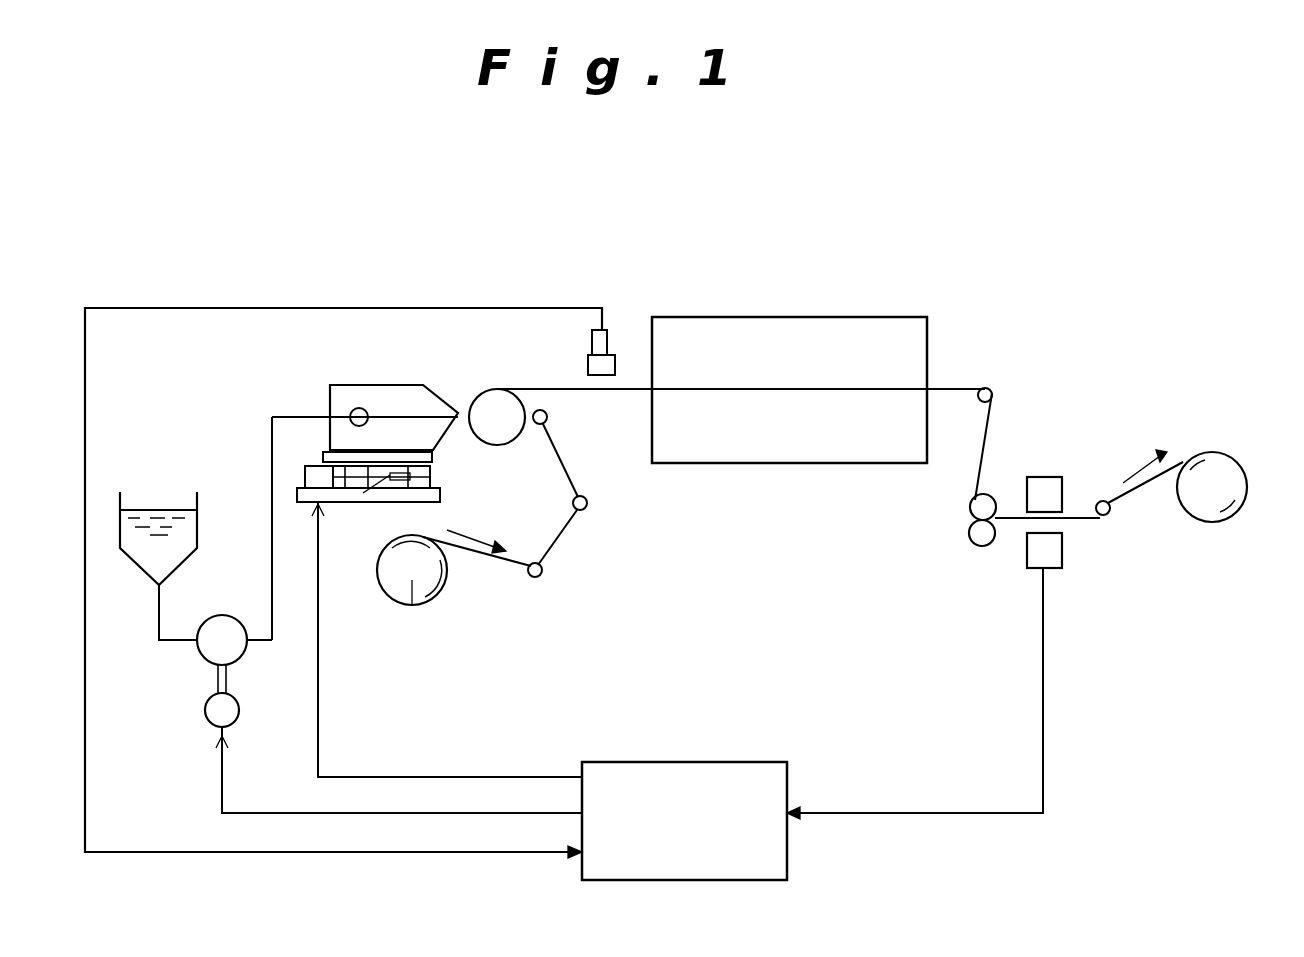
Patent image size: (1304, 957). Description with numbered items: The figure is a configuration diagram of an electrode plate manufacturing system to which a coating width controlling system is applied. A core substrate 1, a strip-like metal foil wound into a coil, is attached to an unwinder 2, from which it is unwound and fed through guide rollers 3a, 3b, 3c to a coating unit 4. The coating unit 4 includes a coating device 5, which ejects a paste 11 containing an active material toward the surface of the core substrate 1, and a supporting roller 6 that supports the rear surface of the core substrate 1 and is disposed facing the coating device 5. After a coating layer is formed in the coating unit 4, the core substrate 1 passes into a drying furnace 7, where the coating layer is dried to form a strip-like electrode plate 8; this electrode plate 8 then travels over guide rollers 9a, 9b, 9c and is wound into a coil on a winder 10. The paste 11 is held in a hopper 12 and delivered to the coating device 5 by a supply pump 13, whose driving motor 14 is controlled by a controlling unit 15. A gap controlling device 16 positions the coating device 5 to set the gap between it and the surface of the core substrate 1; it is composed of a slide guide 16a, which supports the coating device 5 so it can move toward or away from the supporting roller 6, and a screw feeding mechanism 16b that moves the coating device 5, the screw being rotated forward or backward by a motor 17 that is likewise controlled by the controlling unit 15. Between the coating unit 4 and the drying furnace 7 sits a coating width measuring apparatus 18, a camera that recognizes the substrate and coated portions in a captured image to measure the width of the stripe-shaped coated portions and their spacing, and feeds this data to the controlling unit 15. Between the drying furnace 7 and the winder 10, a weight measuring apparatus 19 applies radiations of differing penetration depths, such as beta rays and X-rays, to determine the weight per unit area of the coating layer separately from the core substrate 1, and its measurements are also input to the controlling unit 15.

The core substrate 1 is at (503, 568).
The unwinder 2 is at (412, 585).
The guide roller 3a is at (540, 578).
The guide roller 3b is at (585, 510).
The guide roller 3c is at (550, 415).
The coating unit 4 is at (460, 386).
The coating device 5 is at (385, 405).
The supporting roller 6 is at (490, 413).
The drying furnace 7 is at (806, 440).
The strip-like electrode plate 8 is at (957, 385).
The guide roller 9a is at (1000, 392).
The guide roller 9b is at (965, 530).
The guide roller 9c is at (1105, 520).
The winder 10 is at (1208, 520).
The paste 11 is at (152, 512).
The hopper 12 is at (138, 570).
The supply pump 13 is at (226, 612).
The motor 14 is at (205, 718).
The controlling unit 15 is at (672, 765).
The gap controlling device 16 is at (470, 490).
The slide guide 16a is at (432, 473).
The screw feeding mechanism 16b is at (368, 492).
The motor 17 is at (313, 465).
The coating width measuring apparatus 18 is at (605, 362).
The weight measuring apparatus 19 is at (1040, 555).